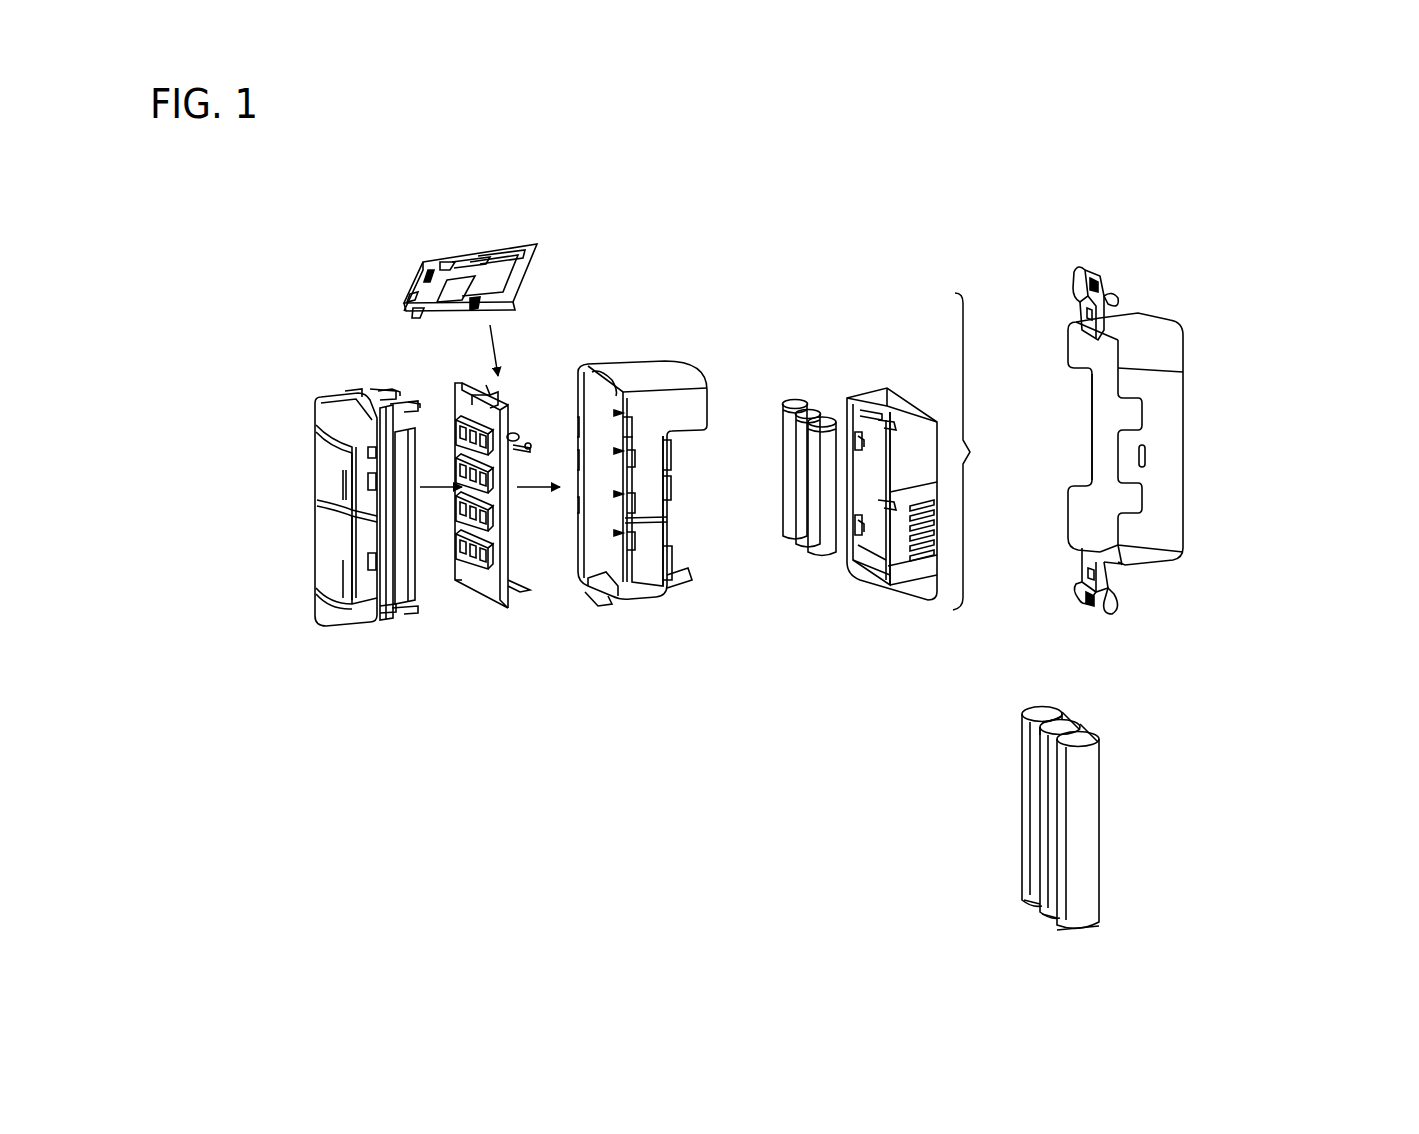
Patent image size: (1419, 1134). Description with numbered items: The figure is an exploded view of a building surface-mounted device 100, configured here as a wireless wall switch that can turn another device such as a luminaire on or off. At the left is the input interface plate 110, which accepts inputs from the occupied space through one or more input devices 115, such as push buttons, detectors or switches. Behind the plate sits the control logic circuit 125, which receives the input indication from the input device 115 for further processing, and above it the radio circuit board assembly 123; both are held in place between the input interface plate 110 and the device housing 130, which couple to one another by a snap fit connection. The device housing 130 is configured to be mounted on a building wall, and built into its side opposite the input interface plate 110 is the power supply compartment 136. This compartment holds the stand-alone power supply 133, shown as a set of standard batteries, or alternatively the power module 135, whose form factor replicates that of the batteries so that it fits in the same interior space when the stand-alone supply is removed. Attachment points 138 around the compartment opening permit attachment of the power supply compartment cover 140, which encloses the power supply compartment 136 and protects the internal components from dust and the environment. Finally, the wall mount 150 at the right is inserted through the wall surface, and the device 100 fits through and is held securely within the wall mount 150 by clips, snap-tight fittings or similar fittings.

The device 100 is at (970, 452).
The input interface plate 110 is at (348, 392).
The input device 115 is at (306, 471).
The radio circuit board assembly 123 is at (478, 240).
The control logic circuit 125 is at (505, 602).
The device housing 130 is at (655, 363).
The stand-alone power supply 133 is at (833, 558).
The power module 135 is at (990, 838).
The power supply compartment 136 is at (700, 498).
The attachment points 138 is at (693, 464).
The power supply compartment cover 140 is at (868, 393).
The wall mount 150 is at (1186, 452).